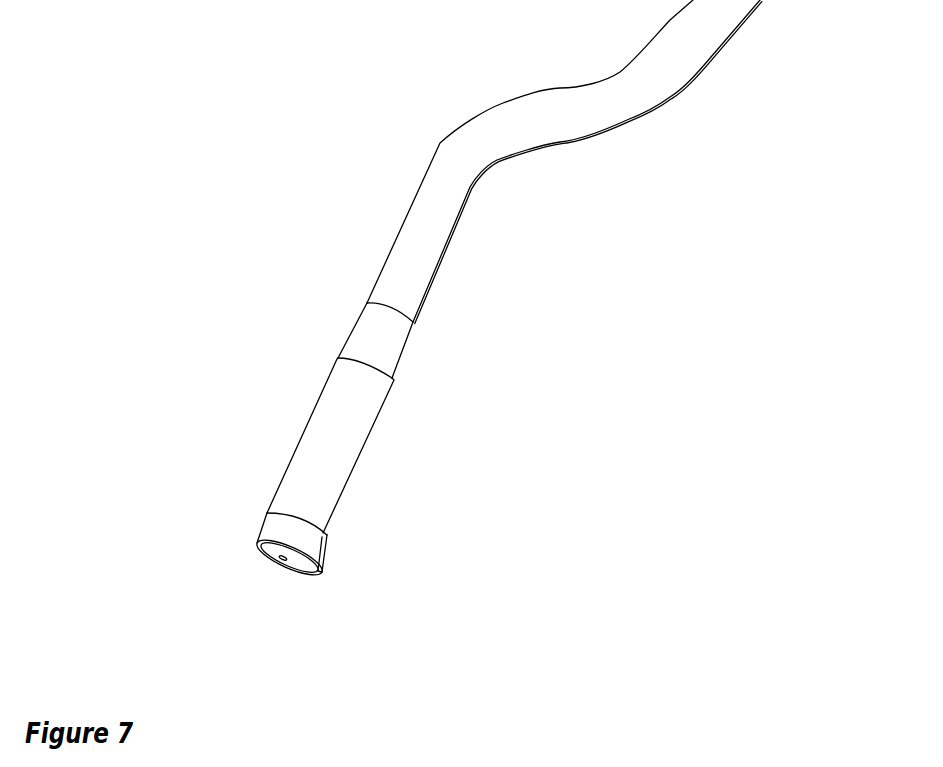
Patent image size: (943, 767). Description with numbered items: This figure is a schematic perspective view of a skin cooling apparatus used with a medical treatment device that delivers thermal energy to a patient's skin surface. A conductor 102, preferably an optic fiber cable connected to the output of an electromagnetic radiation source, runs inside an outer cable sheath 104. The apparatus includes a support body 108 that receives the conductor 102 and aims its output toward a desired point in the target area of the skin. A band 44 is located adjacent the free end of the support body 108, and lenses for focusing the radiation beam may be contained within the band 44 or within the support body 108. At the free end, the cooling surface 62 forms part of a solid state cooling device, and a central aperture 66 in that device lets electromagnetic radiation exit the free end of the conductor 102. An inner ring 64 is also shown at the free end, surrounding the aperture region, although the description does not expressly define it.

The outer cable sheath 104 is at (460, 162).
The conductor 102 is at (370, 338).
The support body 108 is at (328, 442).
The band 44 is at (338, 530).
The cooling surface 62 is at (271, 556).
The inner ring 64 is at (325, 565).
The central aperture 66 is at (283, 559).